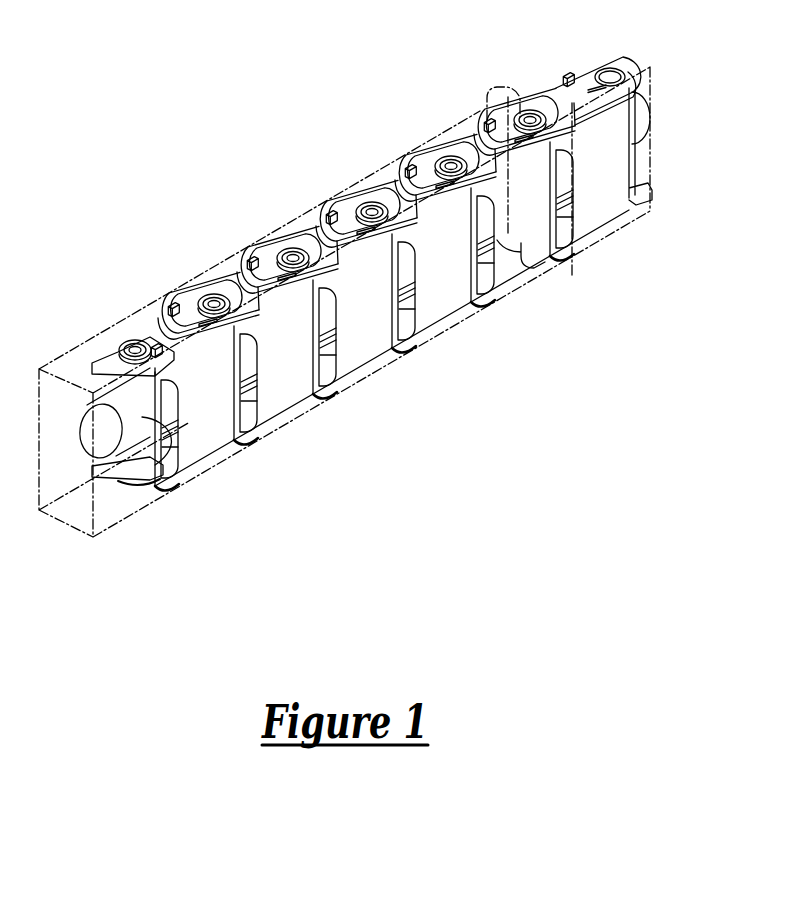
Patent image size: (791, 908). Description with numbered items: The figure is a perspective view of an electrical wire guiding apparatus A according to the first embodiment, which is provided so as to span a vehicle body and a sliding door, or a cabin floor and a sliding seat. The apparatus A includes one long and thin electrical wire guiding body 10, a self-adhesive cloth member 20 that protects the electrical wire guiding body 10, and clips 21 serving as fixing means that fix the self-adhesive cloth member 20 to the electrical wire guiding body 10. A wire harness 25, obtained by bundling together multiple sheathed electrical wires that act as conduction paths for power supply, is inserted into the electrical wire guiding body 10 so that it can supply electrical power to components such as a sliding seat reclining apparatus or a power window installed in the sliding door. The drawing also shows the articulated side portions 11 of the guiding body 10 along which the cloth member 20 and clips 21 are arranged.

The electrical wire guiding apparatus A is at (160, 117).
The electrical wire guiding body 10 is at (316, 150).
The side plate 11 is at (450, 318).
The self-adhesive cloth member 20 is at (505, 300).
The clips 21 is at (493, 93).
The wire harness 25 is at (172, 438).